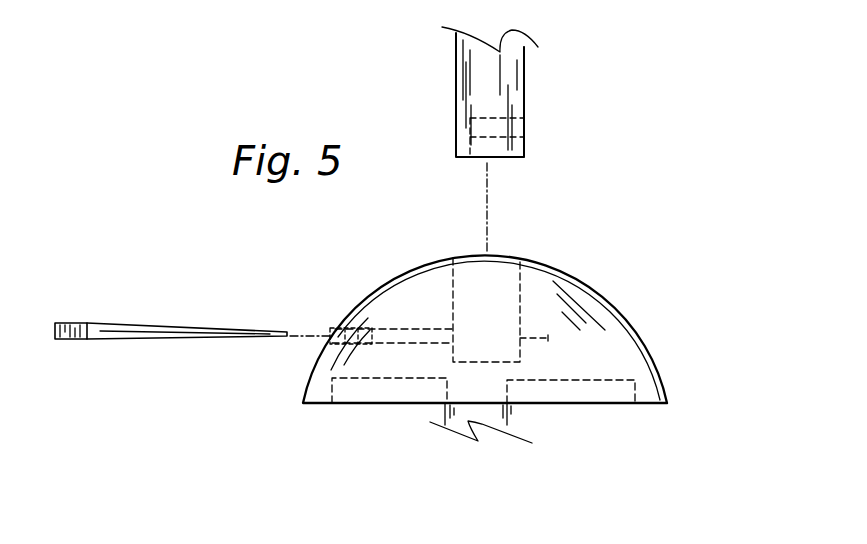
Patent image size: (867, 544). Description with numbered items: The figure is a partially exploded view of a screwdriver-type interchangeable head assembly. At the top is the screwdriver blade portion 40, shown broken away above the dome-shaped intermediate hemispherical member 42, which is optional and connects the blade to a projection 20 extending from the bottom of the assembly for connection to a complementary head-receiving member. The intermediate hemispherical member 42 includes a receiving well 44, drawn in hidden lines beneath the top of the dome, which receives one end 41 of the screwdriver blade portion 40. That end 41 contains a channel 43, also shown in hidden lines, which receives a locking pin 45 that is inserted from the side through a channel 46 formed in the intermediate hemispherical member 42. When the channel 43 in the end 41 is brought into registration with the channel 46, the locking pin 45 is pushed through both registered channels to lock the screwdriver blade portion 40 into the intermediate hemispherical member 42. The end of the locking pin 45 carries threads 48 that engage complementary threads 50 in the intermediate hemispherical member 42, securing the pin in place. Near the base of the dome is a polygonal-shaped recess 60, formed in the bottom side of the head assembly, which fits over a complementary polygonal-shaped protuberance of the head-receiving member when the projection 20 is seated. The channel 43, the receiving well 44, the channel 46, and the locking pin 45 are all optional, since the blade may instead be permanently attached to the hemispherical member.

The projection 20 is at (507, 410).
The screwdriver blade portion 40 is at (541, 50).
The end of the screwdriver blade portion 41 is at (524, 100).
The intermediate hemispherical member 42 is at (650, 374).
The channel 43 is at (470, 124).
The receiving well 44 is at (520, 278).
The locking pin 45 is at (160, 323).
The channel 46 is at (390, 329).
The threads 48 is at (78, 323).
The complementary threads 50 is at (330, 340).
The polygonal-shaped recess 60 is at (588, 384).